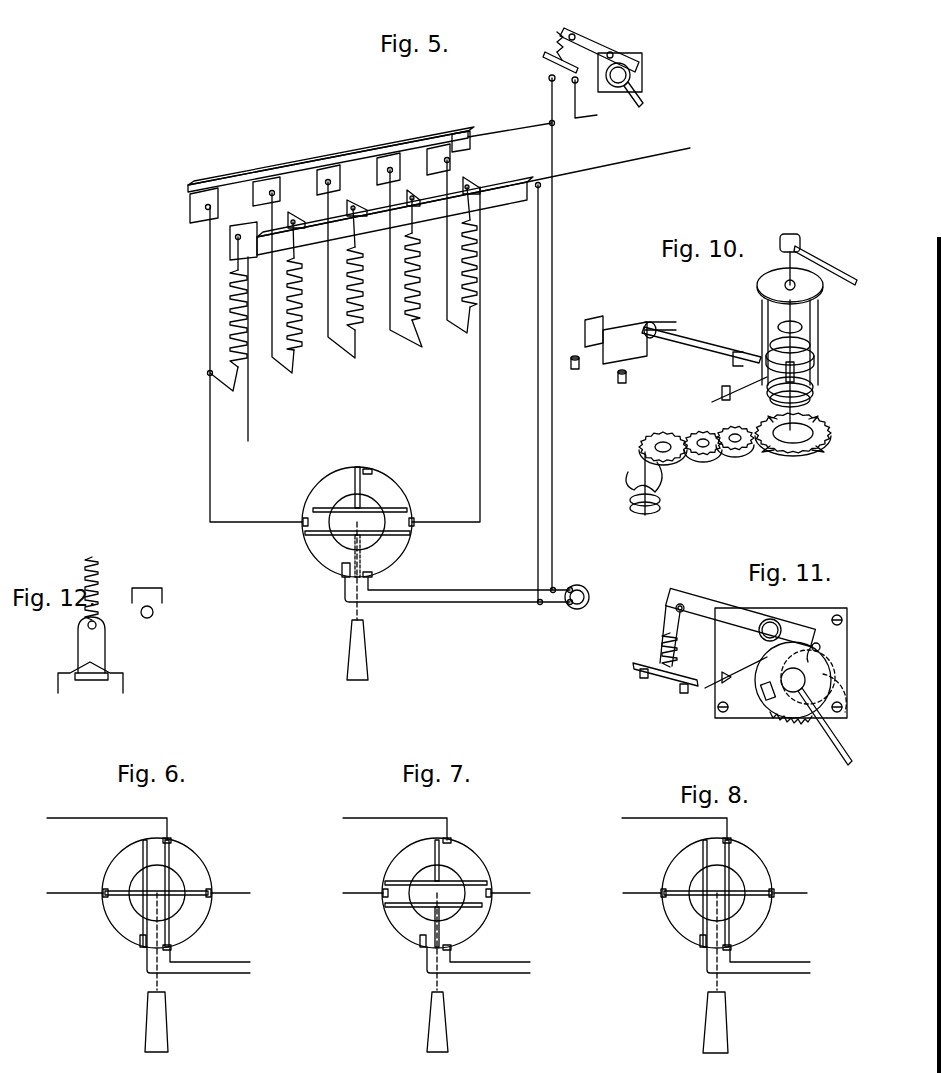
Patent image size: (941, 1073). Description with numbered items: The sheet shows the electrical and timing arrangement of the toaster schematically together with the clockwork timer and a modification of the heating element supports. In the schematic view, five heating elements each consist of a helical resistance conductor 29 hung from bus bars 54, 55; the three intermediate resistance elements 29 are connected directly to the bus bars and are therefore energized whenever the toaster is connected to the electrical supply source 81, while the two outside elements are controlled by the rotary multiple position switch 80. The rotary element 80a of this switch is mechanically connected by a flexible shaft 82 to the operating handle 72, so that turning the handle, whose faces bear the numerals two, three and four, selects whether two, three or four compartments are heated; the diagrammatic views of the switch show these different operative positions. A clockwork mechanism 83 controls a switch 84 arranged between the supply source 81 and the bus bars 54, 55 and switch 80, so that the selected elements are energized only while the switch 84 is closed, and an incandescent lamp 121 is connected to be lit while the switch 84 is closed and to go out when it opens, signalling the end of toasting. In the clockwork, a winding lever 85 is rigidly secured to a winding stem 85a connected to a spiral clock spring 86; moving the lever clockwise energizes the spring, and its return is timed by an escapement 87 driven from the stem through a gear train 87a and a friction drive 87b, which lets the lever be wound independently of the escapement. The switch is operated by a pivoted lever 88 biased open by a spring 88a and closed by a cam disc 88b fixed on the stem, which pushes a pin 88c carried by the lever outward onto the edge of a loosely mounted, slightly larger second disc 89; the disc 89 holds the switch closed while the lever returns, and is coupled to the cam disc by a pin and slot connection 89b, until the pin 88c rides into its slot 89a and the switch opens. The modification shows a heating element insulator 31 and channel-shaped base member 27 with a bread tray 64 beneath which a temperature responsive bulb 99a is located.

In FIG. 5, the bus bar 54 is at (462, 135).
In FIG. 5, the bus bar 55 is at (514, 198).
In FIG. 5, the helical resistance conductor 29 is at (233, 350).
In FIG. 12, the helical resistance conductor 29 is at (88, 572).
In FIG. 5, the multiple position switch 80 is at (377, 520).
In FIG. 6, the multiple position switch 80 is at (177, 893).
In FIG. 7, the multiple position switch 80 is at (453, 893).
In FIG. 8, the multiple position switch 80 is at (716, 894).
In FIG. 5, the rotary element 80a is at (377, 543).
In FIG. 6, the rotary element 80a is at (178, 910).
In FIG. 7, the rotary element 80a is at (455, 912).
In FIG. 8, the rotary element 80a is at (737, 903).
In FIG. 5, the electrical supply source 81 is at (595, 170).
In FIG. 5, the flexible shaft 82 is at (353, 612).
In FIG. 6, the flexible shaft 82 is at (150, 983).
In FIG. 7, the flexible shaft 82 is at (432, 983).
In FIG. 8, the flexible shaft 82 is at (712, 983).
In FIG. 5, the operating handle 72 is at (365, 658).
In FIG. 6, the operating handle 72 is at (162, 1035).
In FIG. 7, the operating handle 72 is at (440, 1035).
In FIG. 8, the operating handle 72 is at (718, 1035).
In FIG. 5, the incandescent lamp 121 is at (590, 585).
In FIG. 5, the clockwork mechanism 83 is at (642, 63).
In FIG. 5, the switch 84 is at (548, 72).
In FIG. 10, the switch 84 is at (628, 363).
In FIG. 11, the switch 84 is at (637, 666).
In FIG. 5, the winding lever 85 is at (645, 100).
In FIG. 10, the winding lever 85 is at (822, 262).
In FIG. 11, the winding lever 85 is at (847, 760).
In FIG. 10, the winding stem 85a is at (805, 310).
In FIG. 10, the spiral clock spring 86 is at (806, 400).
In FIG. 10, the escapement 87 is at (630, 486).
In FIG. 10, the gear train 87a is at (734, 455).
In FIG. 10, the friction drive 87b is at (830, 431).
In FIG. 5, the pivoted lever 88 is at (590, 44).
In FIG. 10, the pivoted lever 88 is at (690, 332).
In FIG. 11, the pivoted lever 88 is at (700, 608).
In FIG. 10, the spring 88a is at (747, 383).
In FIG. 11, the spring 88a is at (743, 675).
In FIG. 10, the cam disc 88b is at (767, 279).
In FIG. 11, the cam disc 88b is at (800, 712).
In FIG. 10, the pin 88c is at (820, 370).
In FIG. 11, the pin 88c is at (815, 645).
In FIG. 10, the second disc 89 is at (815, 346).
In FIG. 11, the second disc 89 is at (767, 712).
In FIG. 10, the slot 89a is at (812, 334).
In FIG. 11, the slot 89a is at (843, 712).
In FIG. 10, the pin and slot connection 89b is at (757, 352).
In FIG. 11, the pin and slot connection 89b is at (777, 702).
In FIG. 12, the insulating supporting member 31 is at (78, 638).
In FIG. 12, the channel-shaped base member 27 is at (127, 678).
In FIG. 12, the tray 64 is at (150, 588).
In FIG. 12, the temperature responsive bulb 99a is at (153, 615).